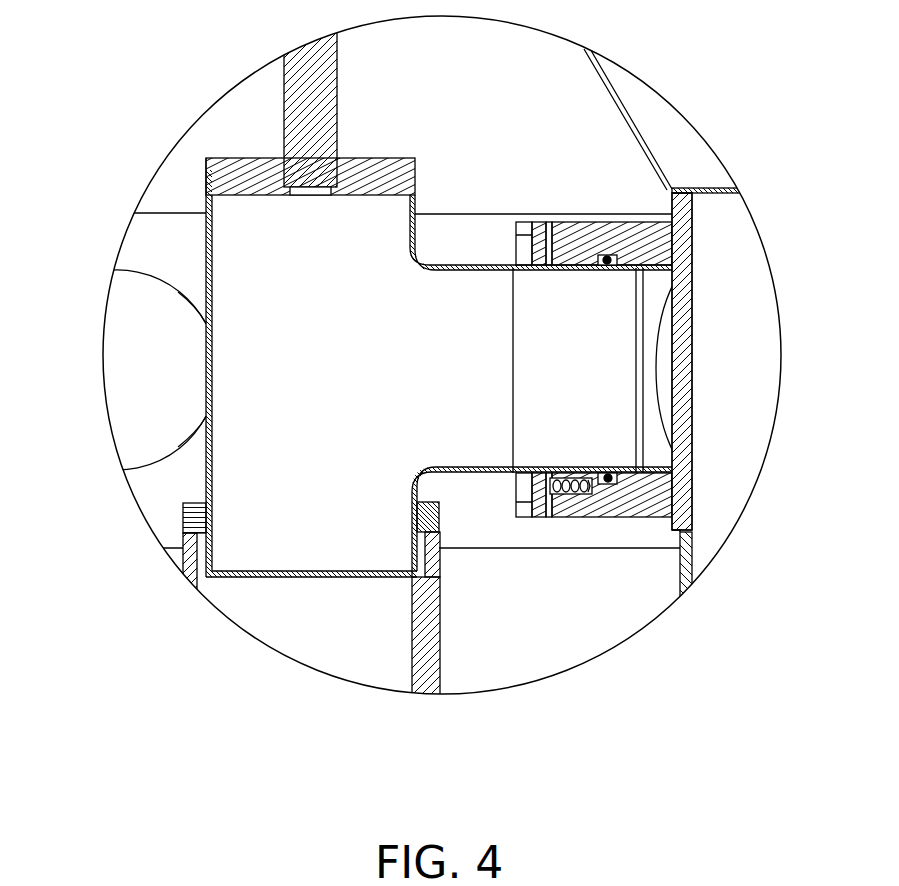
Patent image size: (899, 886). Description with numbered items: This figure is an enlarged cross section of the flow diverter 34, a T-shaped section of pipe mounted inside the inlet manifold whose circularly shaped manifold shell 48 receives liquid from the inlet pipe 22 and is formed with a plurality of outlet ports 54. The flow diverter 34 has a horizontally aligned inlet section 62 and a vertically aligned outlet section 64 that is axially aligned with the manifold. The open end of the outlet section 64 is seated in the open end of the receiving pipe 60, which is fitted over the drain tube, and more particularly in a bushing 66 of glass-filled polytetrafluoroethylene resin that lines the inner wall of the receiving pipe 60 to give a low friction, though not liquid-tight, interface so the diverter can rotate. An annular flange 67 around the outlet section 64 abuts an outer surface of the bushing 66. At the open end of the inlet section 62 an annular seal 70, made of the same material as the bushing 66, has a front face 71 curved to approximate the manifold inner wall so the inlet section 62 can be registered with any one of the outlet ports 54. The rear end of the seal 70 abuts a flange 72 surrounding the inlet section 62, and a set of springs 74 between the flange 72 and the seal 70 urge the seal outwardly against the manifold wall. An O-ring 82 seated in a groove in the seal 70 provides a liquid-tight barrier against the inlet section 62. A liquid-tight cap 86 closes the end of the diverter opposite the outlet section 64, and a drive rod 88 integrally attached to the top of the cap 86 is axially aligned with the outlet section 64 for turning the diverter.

The inlet pipe 22 is at (712, 178).
The flow diverter 34 is at (465, 200).
The manifold shell 48 is at (588, 626).
The outlet port 54 is at (143, 355).
The receiving pipe 60 is at (413, 653).
The inlet section 62 is at (566, 311).
The outlet section 64 is at (287, 523).
The bushing 66 is at (440, 525).
The annular flange 67 is at (193, 510).
The annular seal 70 is at (593, 212).
The front face 71 is at (692, 238).
The flange 72 is at (532, 248).
The springs 74 is at (562, 477).
The O-ring 82 is at (608, 474).
The liquid-tight cap 86 is at (412, 158).
The drive rod 88 is at (327, 62).